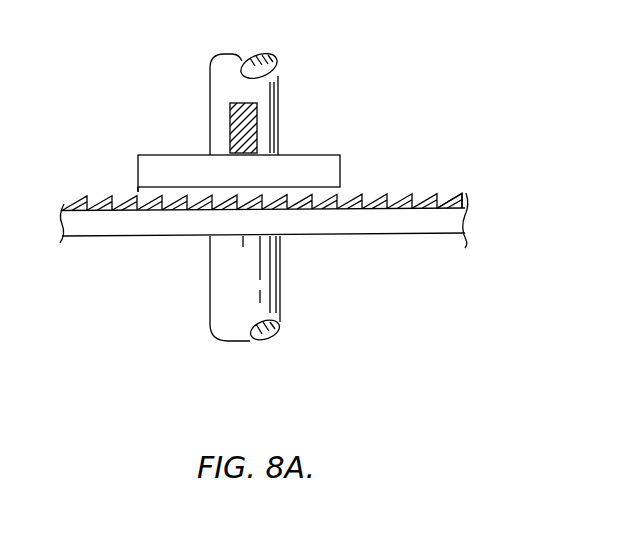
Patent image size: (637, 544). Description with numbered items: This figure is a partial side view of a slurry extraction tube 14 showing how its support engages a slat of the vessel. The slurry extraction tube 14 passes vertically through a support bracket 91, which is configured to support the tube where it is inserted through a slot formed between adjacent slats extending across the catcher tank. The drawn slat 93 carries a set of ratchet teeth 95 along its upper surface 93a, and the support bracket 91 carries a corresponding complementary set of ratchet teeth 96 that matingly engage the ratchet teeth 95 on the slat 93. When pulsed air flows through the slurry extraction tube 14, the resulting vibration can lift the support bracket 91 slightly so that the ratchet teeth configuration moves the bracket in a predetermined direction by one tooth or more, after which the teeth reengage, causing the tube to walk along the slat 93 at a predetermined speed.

The slurry extraction tube 14 is at (278, 87).
The support bracket 91 is at (318, 165).
The slat 93 is at (430, 225).
The upper surface 93a is at (462, 200).
The ratchet teeth 95 is at (388, 203).
The ratchet teeth 96 is at (148, 190).